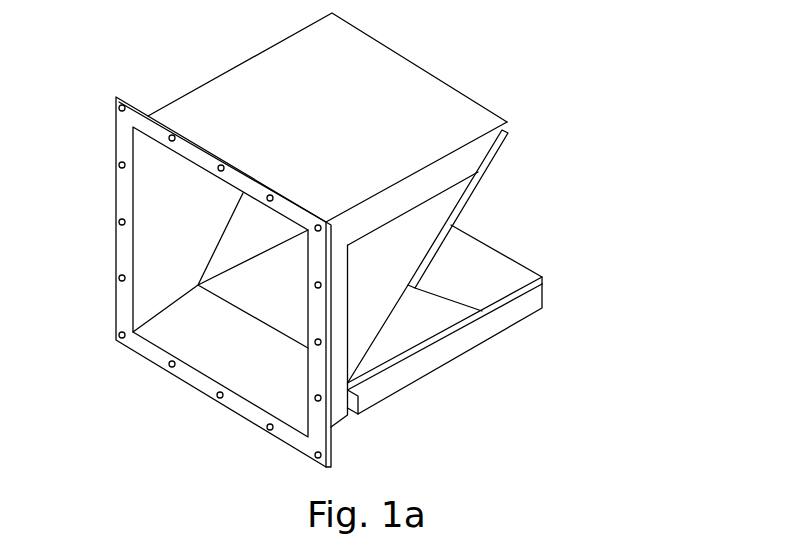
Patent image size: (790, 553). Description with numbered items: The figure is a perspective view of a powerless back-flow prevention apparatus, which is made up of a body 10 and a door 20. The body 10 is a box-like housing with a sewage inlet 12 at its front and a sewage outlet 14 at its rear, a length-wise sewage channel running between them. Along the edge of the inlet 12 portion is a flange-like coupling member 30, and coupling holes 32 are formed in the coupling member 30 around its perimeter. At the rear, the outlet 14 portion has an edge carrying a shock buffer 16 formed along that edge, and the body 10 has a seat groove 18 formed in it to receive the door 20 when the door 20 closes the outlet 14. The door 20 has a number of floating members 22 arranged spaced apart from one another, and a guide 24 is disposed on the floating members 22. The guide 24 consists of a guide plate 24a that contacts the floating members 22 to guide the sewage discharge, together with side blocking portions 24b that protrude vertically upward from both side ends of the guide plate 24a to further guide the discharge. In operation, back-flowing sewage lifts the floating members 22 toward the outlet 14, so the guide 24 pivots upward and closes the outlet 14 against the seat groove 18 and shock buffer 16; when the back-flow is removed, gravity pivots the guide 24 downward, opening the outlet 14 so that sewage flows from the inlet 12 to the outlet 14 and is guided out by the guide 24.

The body 10 is at (378, 61).
The sewage inlet 12 is at (168, 287).
The sewage outlet 14 is at (528, 137).
The shock buffer 16 is at (487, 174).
The seat groove 18 is at (372, 285).
The door 20 is at (517, 313).
The floating members 22 is at (494, 349).
The guide 24 is at (494, 301).
The guide plate 24a is at (504, 258).
The side blocking portions 24b is at (440, 303).
The coupling member 30 is at (194, 259).
The coupling holes 32 is at (118, 166).